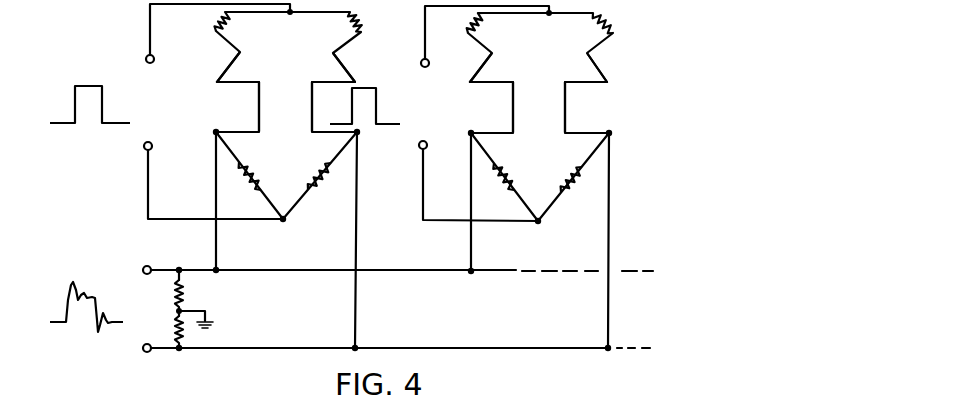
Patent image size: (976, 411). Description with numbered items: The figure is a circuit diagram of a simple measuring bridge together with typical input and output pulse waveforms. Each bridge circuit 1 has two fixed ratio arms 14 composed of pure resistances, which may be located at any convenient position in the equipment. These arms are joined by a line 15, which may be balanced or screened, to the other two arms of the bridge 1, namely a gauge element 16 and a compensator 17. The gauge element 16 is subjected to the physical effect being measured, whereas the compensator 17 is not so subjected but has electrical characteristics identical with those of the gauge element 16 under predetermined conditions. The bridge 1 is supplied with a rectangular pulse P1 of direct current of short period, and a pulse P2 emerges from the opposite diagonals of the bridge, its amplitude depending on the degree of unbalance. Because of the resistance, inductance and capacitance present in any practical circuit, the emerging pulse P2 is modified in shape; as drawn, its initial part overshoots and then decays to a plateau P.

The bridge circuit 1 is at (289, 52).
The fixed ratio arms 14 is at (312, 172).
The line 15 is at (312, 124).
The gauge element 16 is at (362, 32).
The compensator 17 is at (218, 13).
The rectangular pulse P1 is at (104, 108).
The emerging pulse P2 is at (66, 308).
The plateau P is at (92, 297).